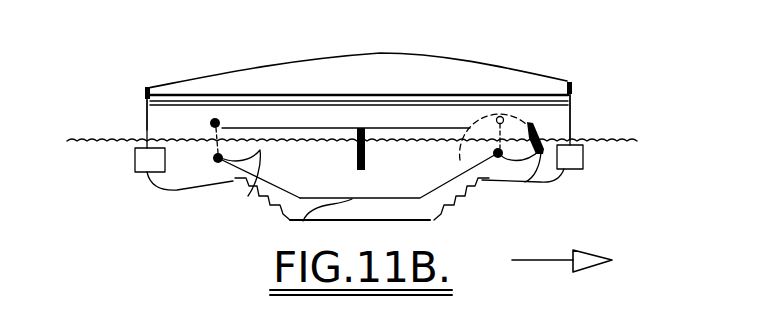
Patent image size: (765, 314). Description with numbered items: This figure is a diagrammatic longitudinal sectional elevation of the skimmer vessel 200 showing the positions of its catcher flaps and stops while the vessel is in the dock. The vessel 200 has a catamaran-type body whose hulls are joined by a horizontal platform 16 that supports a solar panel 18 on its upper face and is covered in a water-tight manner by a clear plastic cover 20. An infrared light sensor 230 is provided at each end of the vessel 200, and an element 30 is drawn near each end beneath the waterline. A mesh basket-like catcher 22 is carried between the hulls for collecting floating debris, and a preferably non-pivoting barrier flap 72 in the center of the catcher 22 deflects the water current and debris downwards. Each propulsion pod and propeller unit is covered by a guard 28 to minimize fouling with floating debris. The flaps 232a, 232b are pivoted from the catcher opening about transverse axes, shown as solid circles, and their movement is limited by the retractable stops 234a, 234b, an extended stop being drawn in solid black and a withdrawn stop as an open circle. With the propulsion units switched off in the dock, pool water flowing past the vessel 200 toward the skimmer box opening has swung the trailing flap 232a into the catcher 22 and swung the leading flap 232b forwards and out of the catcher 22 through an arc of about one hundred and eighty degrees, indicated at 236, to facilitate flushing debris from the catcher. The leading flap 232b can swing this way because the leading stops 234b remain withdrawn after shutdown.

The vessel 200 is at (214, 50).
The infrared light sensor 230 is at (147, 88).
The trailing stops 234a is at (216, 118).
The leading stops 234b is at (500, 116).
The clear plastic cover 20 is at (537, 73).
The solar panel 18 is at (418, 94).
The horizontal platform 16 is at (571, 107).
The arc of flap swing 236 is at (571, 123).
The actuator 30 is at (147, 162).
The barrier flap 72 is at (356, 157).
The trailing flap 232a is at (235, 182).
The leading flap 232b is at (524, 184).
The catcher 22 is at (300, 222).
The guard 28 is at (440, 210).